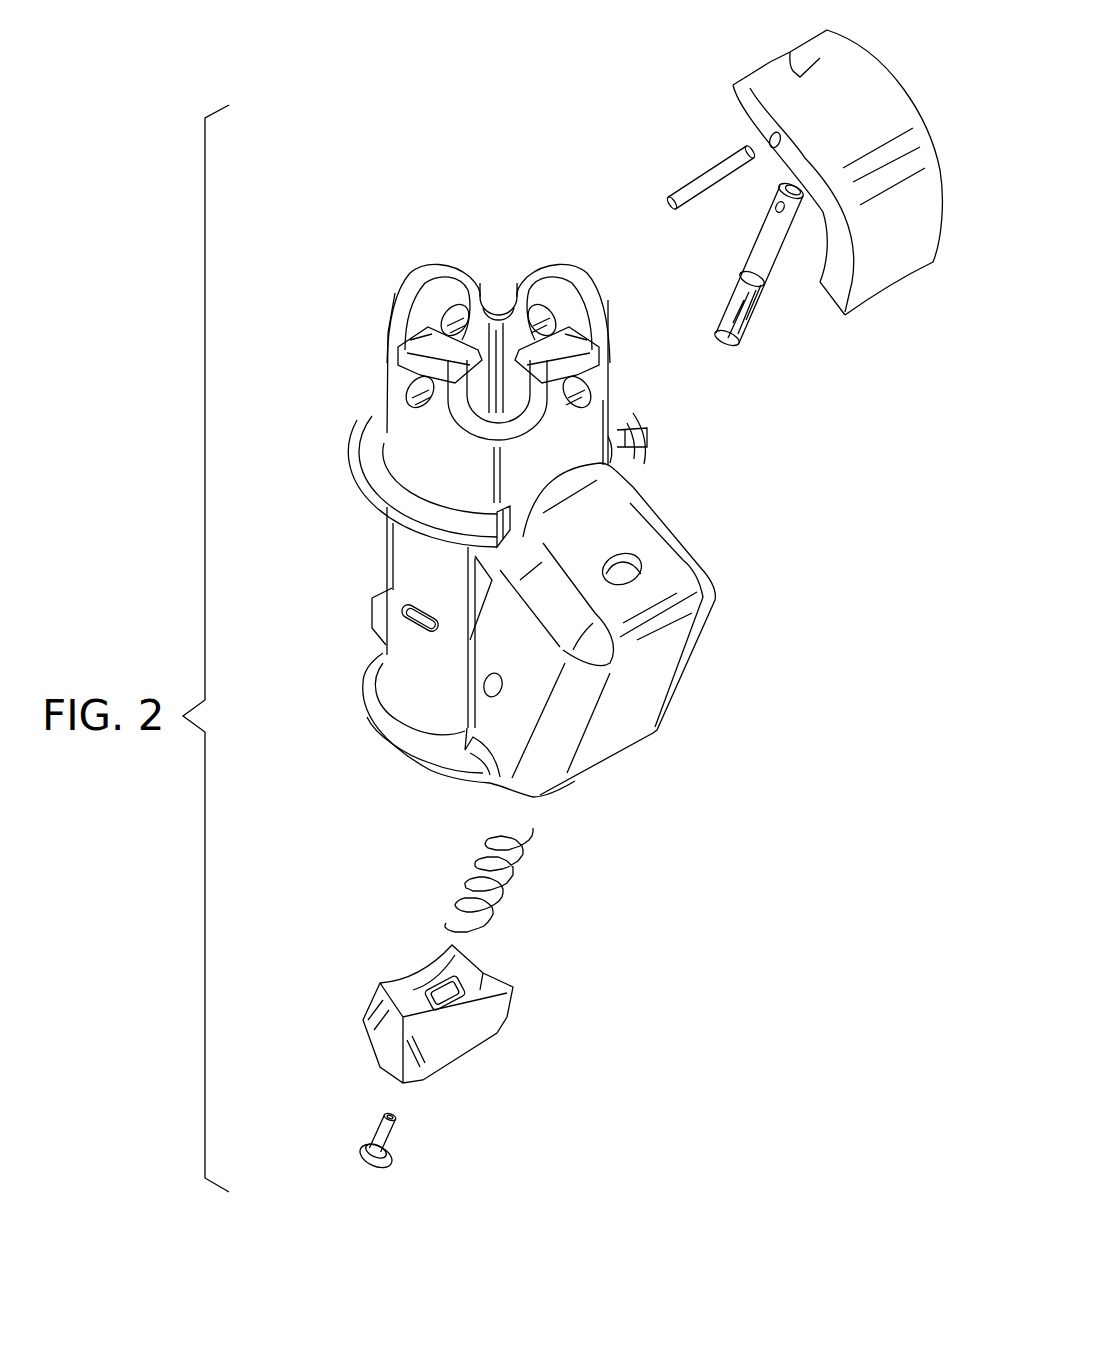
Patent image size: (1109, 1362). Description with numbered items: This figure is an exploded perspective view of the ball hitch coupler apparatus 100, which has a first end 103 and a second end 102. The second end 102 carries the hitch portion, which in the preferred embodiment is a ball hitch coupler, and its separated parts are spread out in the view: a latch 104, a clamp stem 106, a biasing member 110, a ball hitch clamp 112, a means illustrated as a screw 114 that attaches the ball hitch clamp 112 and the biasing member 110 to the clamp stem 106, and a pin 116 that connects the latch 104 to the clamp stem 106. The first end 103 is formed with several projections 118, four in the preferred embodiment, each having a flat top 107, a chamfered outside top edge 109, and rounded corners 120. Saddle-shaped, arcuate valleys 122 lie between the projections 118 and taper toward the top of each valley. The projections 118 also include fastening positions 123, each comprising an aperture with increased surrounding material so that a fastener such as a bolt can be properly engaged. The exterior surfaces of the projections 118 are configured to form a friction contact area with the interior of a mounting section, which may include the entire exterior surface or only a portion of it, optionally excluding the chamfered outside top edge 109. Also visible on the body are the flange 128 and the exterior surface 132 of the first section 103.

The apparatus 100 is at (298, 409).
The second end 102 is at (398, 555).
The first end 103 is at (385, 475).
The latch 104 is at (863, 72).
The clamp stem 106 is at (752, 330).
The flat top 107 is at (433, 280).
The chamfered outside top edge 109 is at (520, 425).
The biasing member 110 is at (517, 880).
The ball hitch clamp 112 is at (483, 1033).
The screw 114 is at (390, 1147).
The pin 116 is at (743, 149).
The projections 118 is at (405, 337).
The rounded corners 120 is at (457, 262).
The valleys 122 is at (501, 286).
The fastening positions 123 is at (481, 290).
The flange 128 is at (400, 535).
The exterior surface 132 is at (553, 463).